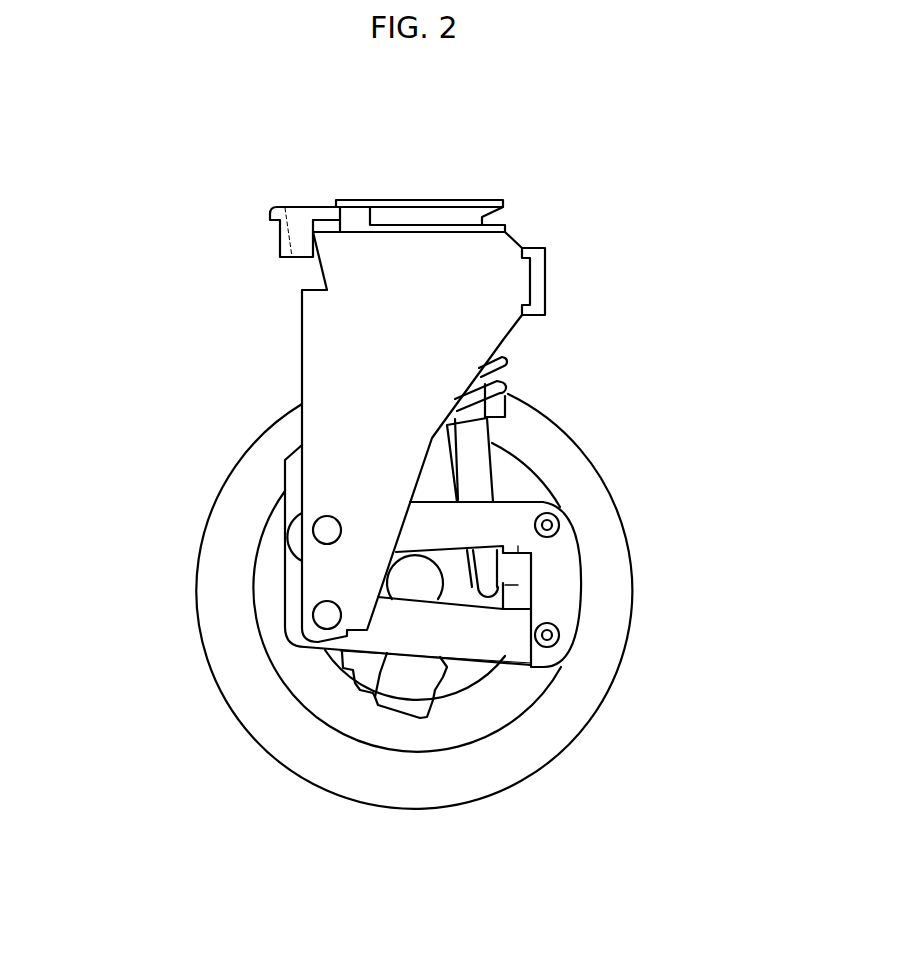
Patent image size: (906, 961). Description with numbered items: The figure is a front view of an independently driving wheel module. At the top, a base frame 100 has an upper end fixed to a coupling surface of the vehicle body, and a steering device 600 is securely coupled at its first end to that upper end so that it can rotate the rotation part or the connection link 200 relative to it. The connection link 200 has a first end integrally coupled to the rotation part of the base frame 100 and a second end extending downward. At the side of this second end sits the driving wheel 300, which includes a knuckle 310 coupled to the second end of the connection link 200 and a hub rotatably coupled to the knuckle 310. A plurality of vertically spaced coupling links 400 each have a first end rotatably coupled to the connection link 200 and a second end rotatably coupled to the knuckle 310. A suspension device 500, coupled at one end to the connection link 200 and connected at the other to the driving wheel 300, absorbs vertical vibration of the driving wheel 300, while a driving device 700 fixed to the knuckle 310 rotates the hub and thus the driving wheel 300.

The base frame 100 is at (470, 205).
The connection link 200 is at (322, 350).
The driving wheel 300 is at (597, 518).
The knuckle 310 is at (562, 607).
The coupling links 400 is at (423, 527).
The suspension device 500 is at (507, 392).
The steering device 600 is at (285, 233).
The driving device 700 is at (457, 575).